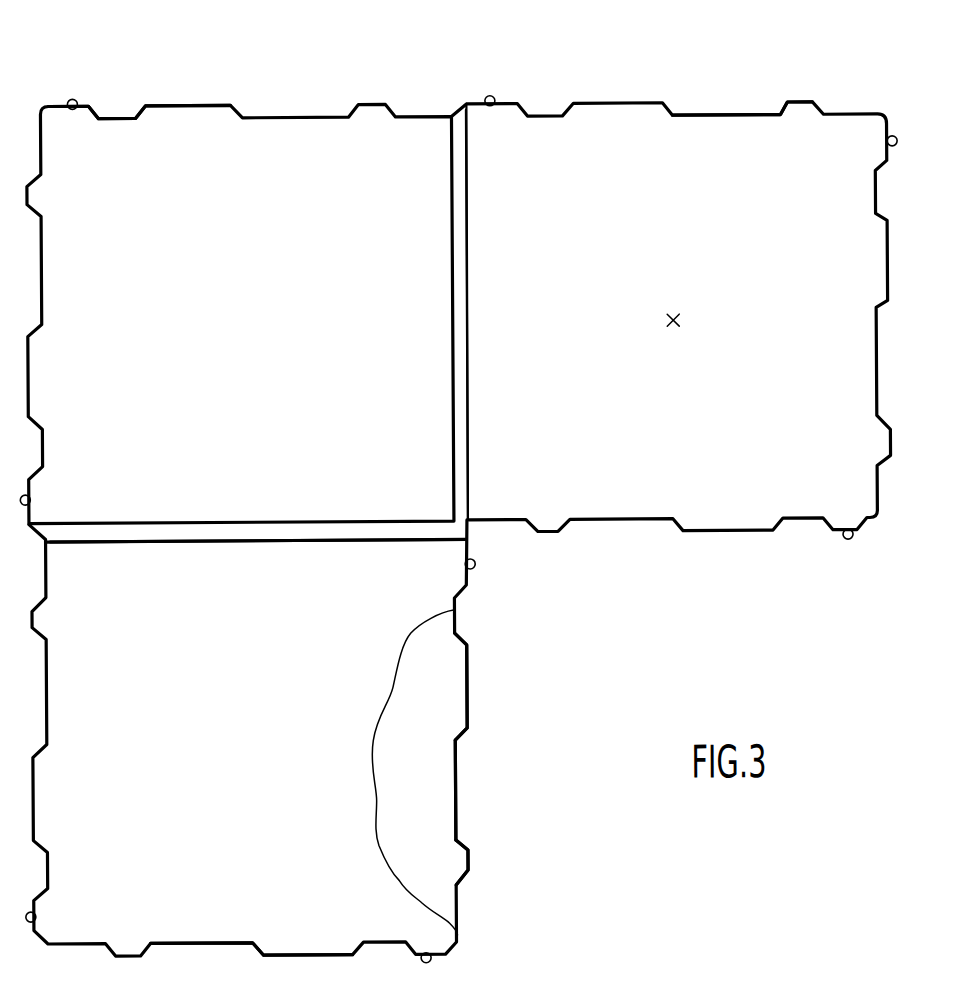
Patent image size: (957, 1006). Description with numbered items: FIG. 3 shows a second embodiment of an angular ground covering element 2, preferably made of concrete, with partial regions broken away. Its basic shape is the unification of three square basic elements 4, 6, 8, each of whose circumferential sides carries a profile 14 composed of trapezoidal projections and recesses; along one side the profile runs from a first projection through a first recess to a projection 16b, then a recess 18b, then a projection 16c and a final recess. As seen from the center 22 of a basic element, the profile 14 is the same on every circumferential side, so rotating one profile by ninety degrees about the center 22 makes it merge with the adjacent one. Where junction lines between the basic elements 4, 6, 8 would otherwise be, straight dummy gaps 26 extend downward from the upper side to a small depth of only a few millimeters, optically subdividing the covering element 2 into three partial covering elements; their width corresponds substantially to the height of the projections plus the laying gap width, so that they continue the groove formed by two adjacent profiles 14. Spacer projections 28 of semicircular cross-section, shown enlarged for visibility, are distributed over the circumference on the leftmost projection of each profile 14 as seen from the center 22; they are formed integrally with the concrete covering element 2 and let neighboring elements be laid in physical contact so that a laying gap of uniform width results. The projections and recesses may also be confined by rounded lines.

The ground covering element 2 is at (463, 482).
The basic element 4 is at (240, 764).
The basic element 6 is at (268, 344).
The basic element 8 is at (645, 253).
The profile 14 is at (57, 288).
The projection 16b is at (468, 687).
The projection 16c is at (467, 868).
The recess 18b is at (455, 790).
The center 22 is at (684, 320).
The dummy gap 26 is at (465, 350).
The spacer projection 28 is at (77, 97).